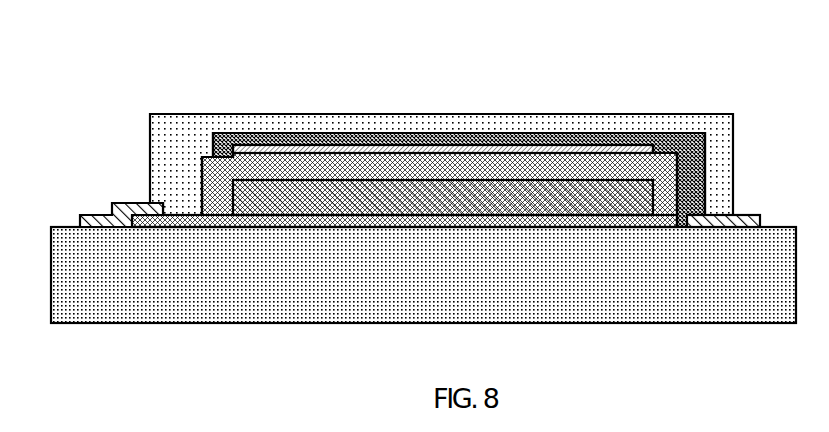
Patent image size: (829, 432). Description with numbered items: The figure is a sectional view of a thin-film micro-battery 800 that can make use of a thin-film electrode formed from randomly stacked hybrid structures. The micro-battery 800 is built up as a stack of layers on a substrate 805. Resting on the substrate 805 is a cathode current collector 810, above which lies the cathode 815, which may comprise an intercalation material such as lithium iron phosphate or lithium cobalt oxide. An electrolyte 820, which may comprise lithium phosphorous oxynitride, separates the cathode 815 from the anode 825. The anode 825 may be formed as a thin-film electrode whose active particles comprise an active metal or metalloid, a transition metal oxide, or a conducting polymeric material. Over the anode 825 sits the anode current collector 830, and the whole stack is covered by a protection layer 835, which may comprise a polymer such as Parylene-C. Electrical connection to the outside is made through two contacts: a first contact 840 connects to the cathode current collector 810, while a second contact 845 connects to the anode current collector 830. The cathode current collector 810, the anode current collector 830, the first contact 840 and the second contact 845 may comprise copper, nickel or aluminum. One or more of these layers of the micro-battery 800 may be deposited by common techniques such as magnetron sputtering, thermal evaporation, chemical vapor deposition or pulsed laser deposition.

The micro-battery 800 is at (337, 72).
The substrate 805 is at (633, 303).
The cathode current collector 810 is at (188, 213).
The cathode 815 is at (253, 190).
The electrolyte 820 is at (663, 170).
The anode 825 is at (418, 150).
The anode current collector 830 is at (548, 132).
The protection layer 835 is at (712, 122).
The first contact 840 is at (112, 215).
The second contact 845 is at (740, 215).